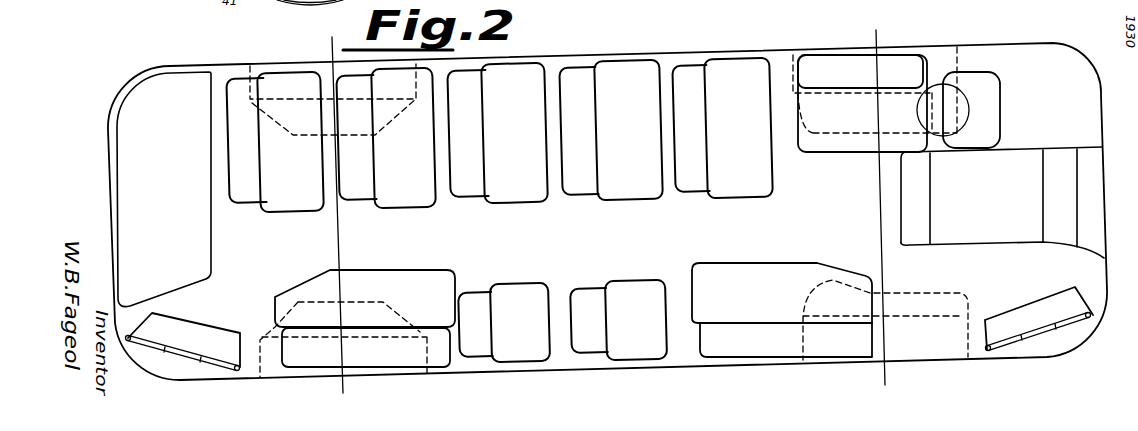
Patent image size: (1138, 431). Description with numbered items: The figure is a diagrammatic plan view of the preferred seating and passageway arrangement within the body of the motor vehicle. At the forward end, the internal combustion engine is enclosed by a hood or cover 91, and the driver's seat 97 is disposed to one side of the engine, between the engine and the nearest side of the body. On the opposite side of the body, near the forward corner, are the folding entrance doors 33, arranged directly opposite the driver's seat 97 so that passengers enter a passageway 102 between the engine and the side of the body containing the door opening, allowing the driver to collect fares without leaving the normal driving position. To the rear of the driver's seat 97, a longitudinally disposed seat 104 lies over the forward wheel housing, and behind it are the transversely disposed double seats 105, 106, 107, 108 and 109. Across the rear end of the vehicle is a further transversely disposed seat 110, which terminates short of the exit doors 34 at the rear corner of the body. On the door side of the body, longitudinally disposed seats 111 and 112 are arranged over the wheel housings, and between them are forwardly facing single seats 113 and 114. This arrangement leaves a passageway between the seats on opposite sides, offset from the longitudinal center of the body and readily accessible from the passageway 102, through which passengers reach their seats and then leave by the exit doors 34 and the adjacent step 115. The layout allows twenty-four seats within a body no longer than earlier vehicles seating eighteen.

The transversely disposed seat 110 is at (122, 198).
The transversely disposed double seat 109 is at (277, 203).
The transversely disposed double seat 108 is at (397, 198).
The transversely disposed double seat 107 is at (500, 194).
The transversely disposed double seat 106 is at (617, 190).
The transversely disposed double seat 105 is at (736, 190).
The longitudinally disposed seat 104 is at (873, 145).
The driver's seat 97 is at (988, 113).
The hood or cover 91 is at (1020, 165).
The passageway 102 is at (971, 268).
The longitudinally disposed seat 111 is at (432, 273).
The longitudinally disposed seat 112 is at (793, 257).
The forwardly facing single seat 113 is at (522, 290).
The forwardly facing single seat 114 is at (638, 288).
The step 115 is at (182, 328).
The exit doors 34 is at (197, 357).
The doors 33 is at (1058, 327).